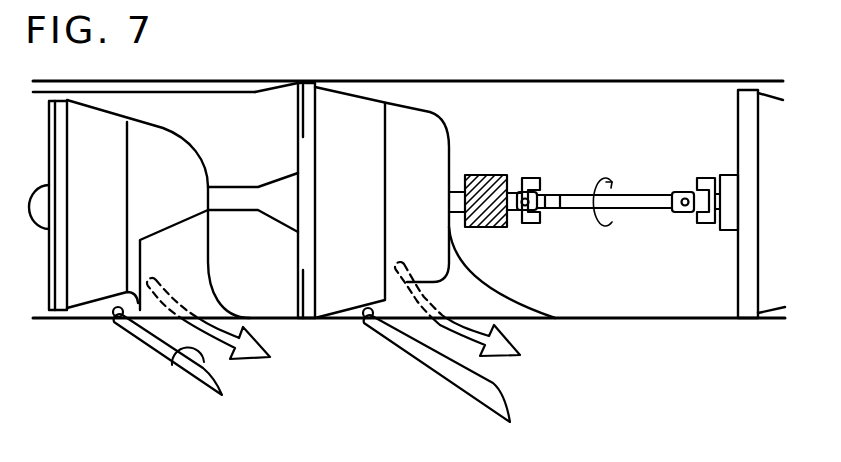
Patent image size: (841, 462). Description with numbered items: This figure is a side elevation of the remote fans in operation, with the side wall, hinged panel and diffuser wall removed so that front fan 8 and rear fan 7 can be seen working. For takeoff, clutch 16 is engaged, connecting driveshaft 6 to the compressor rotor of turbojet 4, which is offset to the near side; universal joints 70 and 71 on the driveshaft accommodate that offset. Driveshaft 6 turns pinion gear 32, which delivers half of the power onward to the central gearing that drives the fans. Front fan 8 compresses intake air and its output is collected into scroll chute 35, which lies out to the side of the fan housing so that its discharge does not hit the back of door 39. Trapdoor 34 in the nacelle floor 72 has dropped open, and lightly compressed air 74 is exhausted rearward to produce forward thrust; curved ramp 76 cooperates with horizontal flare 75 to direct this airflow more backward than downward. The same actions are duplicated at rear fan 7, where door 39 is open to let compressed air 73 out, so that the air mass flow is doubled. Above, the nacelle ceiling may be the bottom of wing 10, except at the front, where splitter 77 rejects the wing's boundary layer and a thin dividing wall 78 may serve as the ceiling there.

The wing 10 is at (468, 82).
The splitter 77 is at (142, 85).
The thin dividing wall 78 is at (225, 90).
The front fan 8 is at (105, 210).
The rear fan 7 is at (364, 215).
The scroll chute 35 is at (208, 257).
The horizontal flare 75 is at (227, 300).
The trapdoor 34 is at (133, 338).
The curved ramp 76 is at (173, 351).
The lightly compressed air 74 is at (253, 353).
The door 39 is at (403, 353).
The compressed air 73 is at (502, 347).
The nacelle floor 72 is at (607, 317).
The pinion gear 32 is at (493, 227).
The universal joint 70 is at (540, 182).
The universal joint 71 is at (697, 187).
The driveshaft 6 is at (647, 203).
The clutch 16 is at (727, 173).
The turbojet 4 is at (770, 268).